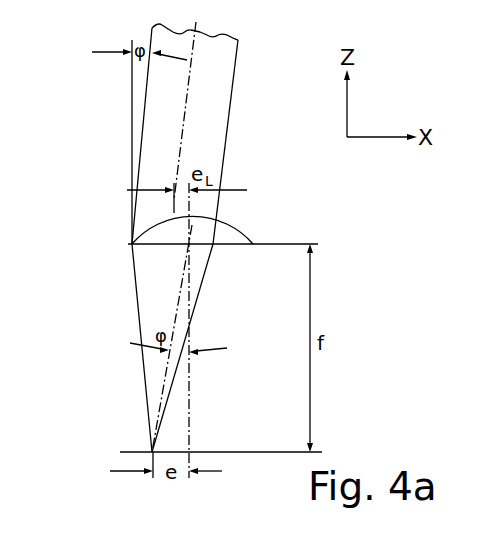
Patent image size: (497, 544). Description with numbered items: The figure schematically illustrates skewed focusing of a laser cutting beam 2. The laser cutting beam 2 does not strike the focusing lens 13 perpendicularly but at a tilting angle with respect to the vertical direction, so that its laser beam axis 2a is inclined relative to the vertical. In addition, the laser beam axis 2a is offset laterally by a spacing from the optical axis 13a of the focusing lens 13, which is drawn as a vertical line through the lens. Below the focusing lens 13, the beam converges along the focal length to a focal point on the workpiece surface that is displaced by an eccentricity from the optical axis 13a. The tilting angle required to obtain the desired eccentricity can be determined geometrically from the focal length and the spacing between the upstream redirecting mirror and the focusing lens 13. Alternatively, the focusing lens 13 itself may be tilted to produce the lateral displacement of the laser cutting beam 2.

The laser cutting beam 2 is at (229, 117).
The laser beam axis 2a is at (193, 44).
The focusing lens 13 is at (230, 233).
The optical axis 13a is at (186, 292).